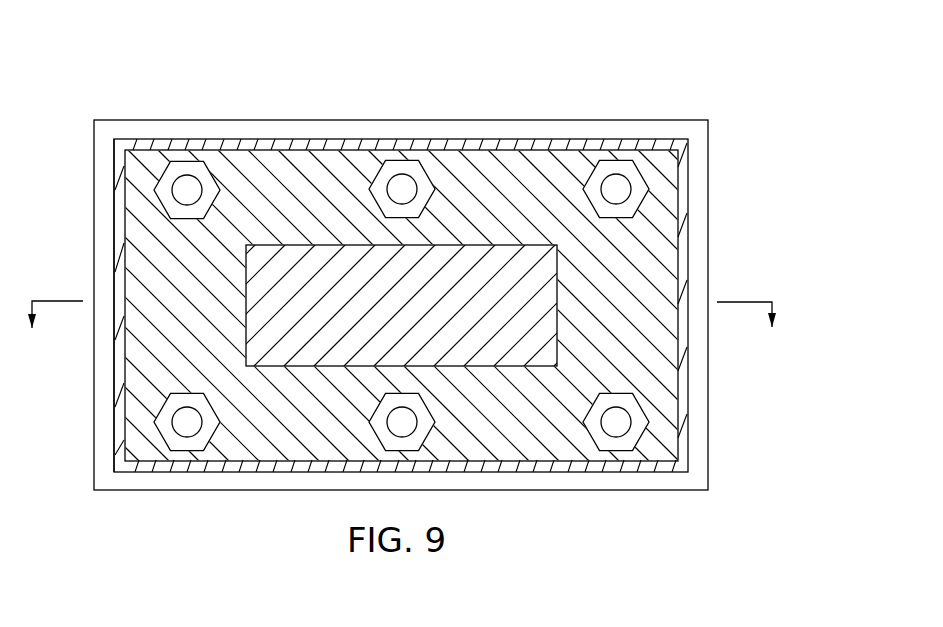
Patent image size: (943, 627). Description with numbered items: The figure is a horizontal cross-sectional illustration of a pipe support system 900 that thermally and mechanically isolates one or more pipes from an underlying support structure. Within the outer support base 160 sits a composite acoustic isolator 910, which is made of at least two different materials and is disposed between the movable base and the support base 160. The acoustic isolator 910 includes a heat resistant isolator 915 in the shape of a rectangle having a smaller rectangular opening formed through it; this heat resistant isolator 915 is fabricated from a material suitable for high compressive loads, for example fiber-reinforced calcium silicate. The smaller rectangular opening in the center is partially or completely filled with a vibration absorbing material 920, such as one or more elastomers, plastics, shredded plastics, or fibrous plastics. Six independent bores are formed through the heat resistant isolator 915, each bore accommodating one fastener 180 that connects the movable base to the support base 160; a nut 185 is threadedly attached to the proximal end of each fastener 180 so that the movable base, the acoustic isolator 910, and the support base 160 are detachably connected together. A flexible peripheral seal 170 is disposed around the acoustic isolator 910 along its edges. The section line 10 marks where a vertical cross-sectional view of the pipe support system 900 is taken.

The pipe support system 900 is at (628, 68).
The support base 160 is at (305, 120).
The acoustic isolator 910 is at (142, 148).
The flexible peripheral seal 170 is at (120, 232).
The heat resistant isolator 915 is at (635, 257).
The vibration absorbing material 920 is at (478, 278).
The nut 185 is at (392, 160).
The fastener 180 is at (617, 190).
The line 10- 10 is at (403, 330).